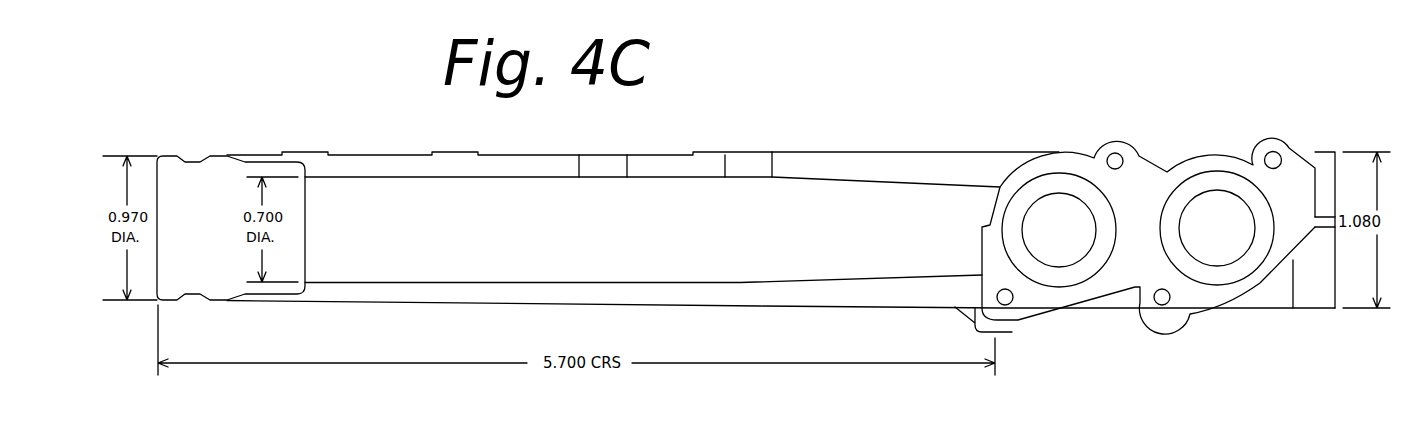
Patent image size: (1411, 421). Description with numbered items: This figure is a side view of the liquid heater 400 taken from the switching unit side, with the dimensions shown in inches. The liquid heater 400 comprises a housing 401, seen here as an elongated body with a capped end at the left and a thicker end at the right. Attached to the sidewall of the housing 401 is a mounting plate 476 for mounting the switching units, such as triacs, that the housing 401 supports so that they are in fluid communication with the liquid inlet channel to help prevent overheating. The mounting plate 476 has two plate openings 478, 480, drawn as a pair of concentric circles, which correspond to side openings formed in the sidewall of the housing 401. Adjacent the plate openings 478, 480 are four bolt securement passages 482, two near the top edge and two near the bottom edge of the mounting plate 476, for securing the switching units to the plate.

The liquid heater 400 is at (761, 256).
The housing 401 is at (857, 152).
The mounting plate 476 is at (1285, 138).
The plate opening 478 is at (1078, 240).
The plate opening 480 is at (1236, 238).
The bolt securement passages 482 is at (1112, 154).